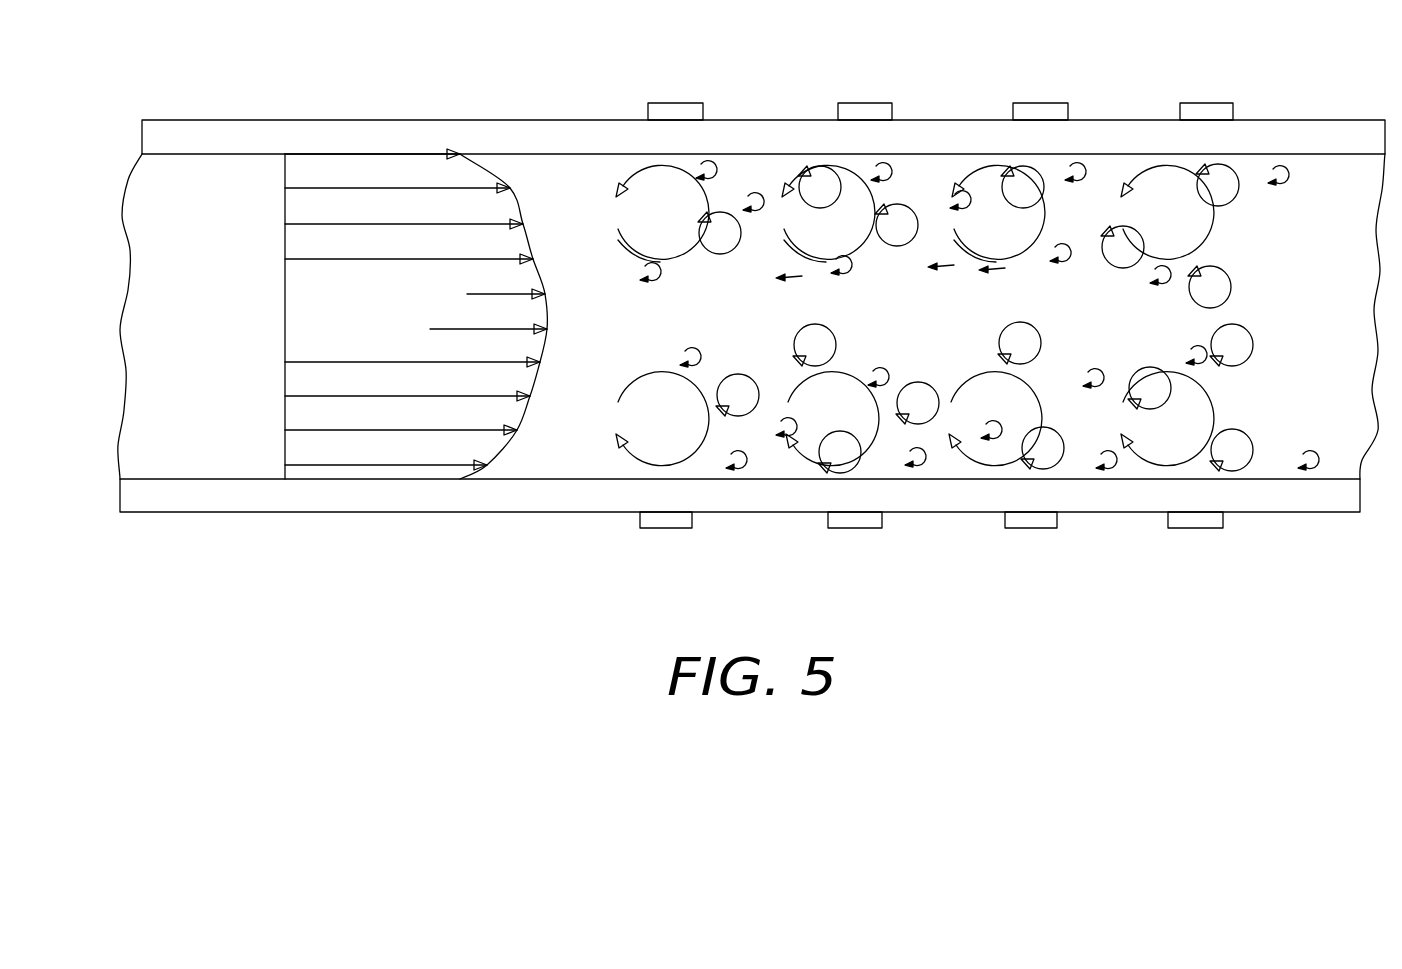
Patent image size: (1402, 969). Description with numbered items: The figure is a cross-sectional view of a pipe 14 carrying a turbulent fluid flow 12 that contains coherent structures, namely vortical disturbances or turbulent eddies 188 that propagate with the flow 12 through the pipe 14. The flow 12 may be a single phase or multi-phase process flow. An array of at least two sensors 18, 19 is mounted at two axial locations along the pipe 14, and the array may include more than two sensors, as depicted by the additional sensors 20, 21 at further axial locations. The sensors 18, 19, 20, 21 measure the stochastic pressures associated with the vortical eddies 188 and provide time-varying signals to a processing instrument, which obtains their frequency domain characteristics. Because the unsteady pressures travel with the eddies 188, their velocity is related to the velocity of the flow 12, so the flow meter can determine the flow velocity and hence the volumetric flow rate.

The fluid flow 12 is at (553, 185).
The pipe 14 is at (1330, 120).
The sensor 18 is at (677, 103).
The sensor 19 is at (865, 103).
The sensor 20 is at (1043, 103).
The sensor 21 is at (1207, 103).
The vortical eddies 188 is at (1210, 223).